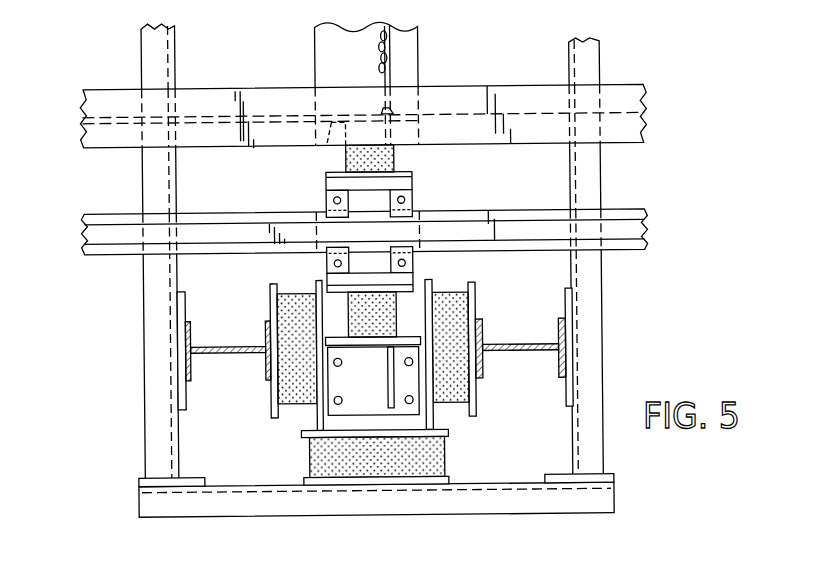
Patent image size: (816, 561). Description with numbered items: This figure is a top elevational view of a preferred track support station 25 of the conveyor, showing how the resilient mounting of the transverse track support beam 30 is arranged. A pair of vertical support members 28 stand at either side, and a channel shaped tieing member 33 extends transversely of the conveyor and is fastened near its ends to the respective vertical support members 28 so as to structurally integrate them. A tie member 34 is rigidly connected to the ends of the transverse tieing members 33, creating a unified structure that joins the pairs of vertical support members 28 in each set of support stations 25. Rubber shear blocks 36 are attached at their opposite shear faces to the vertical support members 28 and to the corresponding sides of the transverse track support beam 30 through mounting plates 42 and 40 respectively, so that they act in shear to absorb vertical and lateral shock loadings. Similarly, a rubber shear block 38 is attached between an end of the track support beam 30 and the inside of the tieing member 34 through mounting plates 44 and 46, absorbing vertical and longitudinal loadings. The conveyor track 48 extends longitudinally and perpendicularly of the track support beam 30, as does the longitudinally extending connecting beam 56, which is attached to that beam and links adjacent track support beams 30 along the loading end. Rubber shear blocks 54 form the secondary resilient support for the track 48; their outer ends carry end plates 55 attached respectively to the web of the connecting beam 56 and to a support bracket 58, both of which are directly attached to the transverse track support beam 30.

The track support station 25 is at (110, 455).
The vertical support member 28 is at (209, 355).
The transverse track support beam 30 is at (412, 65).
The tieing member 33 is at (152, 377).
The tie member 34 is at (312, 517).
The rubber shear block 36 is at (293, 400).
The rubber shear block 38 is at (308, 460).
The mounting plate 40 is at (315, 287).
The mounting plate 42 is at (272, 305).
The mounting plate 44 is at (447, 432).
The mounting plate 46 is at (447, 480).
The conveyor track 48 is at (646, 229).
The rubber shear block 54 is at (387, 160).
The end plate 55 is at (333, 124).
The longitudinally extending connecting beam 56 is at (646, 93).
The support bracket 58 is at (375, 390).